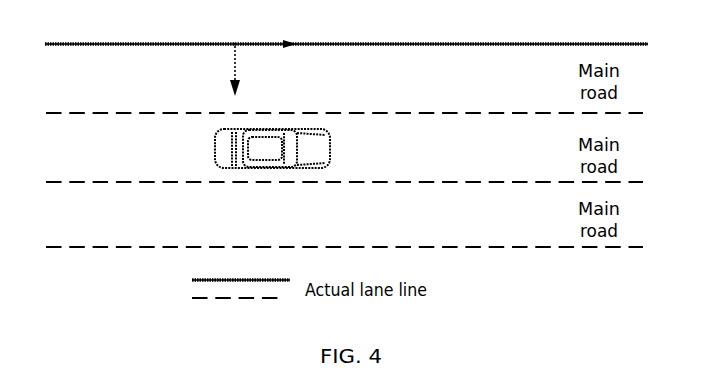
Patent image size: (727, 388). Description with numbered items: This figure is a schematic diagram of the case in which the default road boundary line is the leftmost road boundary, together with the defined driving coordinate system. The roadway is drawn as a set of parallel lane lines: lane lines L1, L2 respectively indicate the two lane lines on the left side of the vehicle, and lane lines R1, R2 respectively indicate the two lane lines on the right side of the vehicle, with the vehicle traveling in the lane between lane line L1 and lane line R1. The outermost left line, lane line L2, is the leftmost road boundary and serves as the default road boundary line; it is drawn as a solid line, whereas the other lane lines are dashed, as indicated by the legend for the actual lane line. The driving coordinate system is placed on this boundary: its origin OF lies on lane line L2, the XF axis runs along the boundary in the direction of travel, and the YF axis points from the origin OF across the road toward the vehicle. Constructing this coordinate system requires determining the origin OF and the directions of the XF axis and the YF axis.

The lane line L2 is at (346, 58).
The lane line L1 is at (344, 128).
The lane line R1 is at (344, 197).
The lane line R2 is at (344, 260).
The origin of the driving coordinate system OF is at (244, 32).
The X axis of the driving coordinate system XF is at (303, 32).
The Y axis of the driving coordinate system YF is at (221, 75).